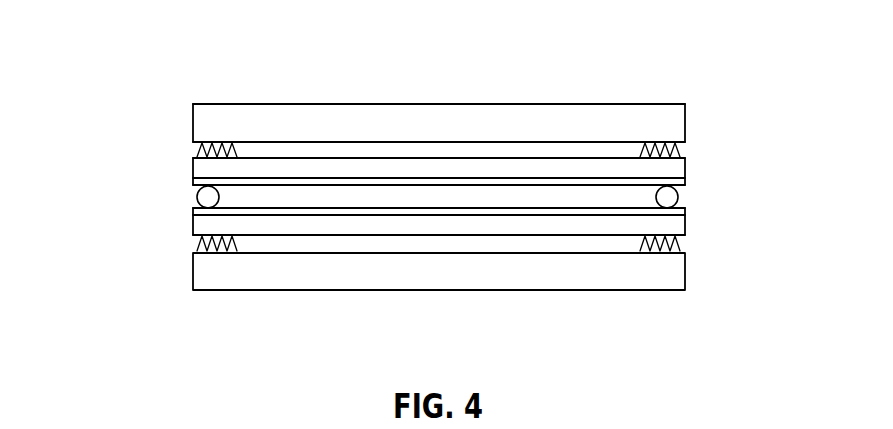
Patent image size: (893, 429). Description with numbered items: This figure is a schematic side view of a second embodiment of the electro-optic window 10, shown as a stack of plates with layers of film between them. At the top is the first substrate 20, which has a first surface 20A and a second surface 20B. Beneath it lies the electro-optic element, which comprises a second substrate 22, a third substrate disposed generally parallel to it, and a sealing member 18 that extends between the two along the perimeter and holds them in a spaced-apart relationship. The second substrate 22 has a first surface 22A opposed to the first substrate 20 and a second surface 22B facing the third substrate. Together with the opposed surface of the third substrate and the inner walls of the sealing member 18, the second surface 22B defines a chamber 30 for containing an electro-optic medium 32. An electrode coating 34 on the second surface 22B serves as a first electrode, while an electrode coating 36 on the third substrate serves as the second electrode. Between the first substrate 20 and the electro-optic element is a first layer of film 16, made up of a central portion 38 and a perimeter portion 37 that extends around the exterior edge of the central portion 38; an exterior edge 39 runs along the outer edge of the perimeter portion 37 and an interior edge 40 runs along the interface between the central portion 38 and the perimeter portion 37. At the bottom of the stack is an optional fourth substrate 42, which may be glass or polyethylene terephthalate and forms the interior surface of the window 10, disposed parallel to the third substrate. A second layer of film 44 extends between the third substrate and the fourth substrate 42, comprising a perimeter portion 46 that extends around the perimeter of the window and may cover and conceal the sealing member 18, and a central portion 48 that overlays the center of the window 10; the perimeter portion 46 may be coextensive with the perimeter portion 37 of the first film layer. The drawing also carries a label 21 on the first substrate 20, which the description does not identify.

The EO window 10 is at (130, 80).
The first layer of film 16 is at (170, 143).
The sealing member 18 is at (208, 198).
The first substrate 20 is at (398, 124).
The first surface of first substrate 20A is at (475, 104).
The second surface of first substrate 20B is at (533, 141).
The edge region of first plate 21 is at (585, 104).
The second substrate 22 is at (343, 175).
The first surface of second substrate 22A is at (316, 159).
The second surface of second substrate 22B is at (440, 178).
The chamber 30 is at (245, 197).
The electro-optic medium 32 is at (288, 197).
The electrode coating 34 is at (588, 187).
The electrode coating 36 is at (625, 213).
The perimeter portion of first layer of film 37 is at (215, 148).
The central portion of first layer of film 38 is at (278, 150).
The exterior edge 39 is at (680, 152).
The interior edge 40 is at (620, 147).
The fourth substrate 42 is at (367, 272).
The second layer of film 44 is at (680, 242).
The perimeter portion of second layer of film 46 is at (215, 255).
The central portion of second layer of film 48 is at (455, 243).